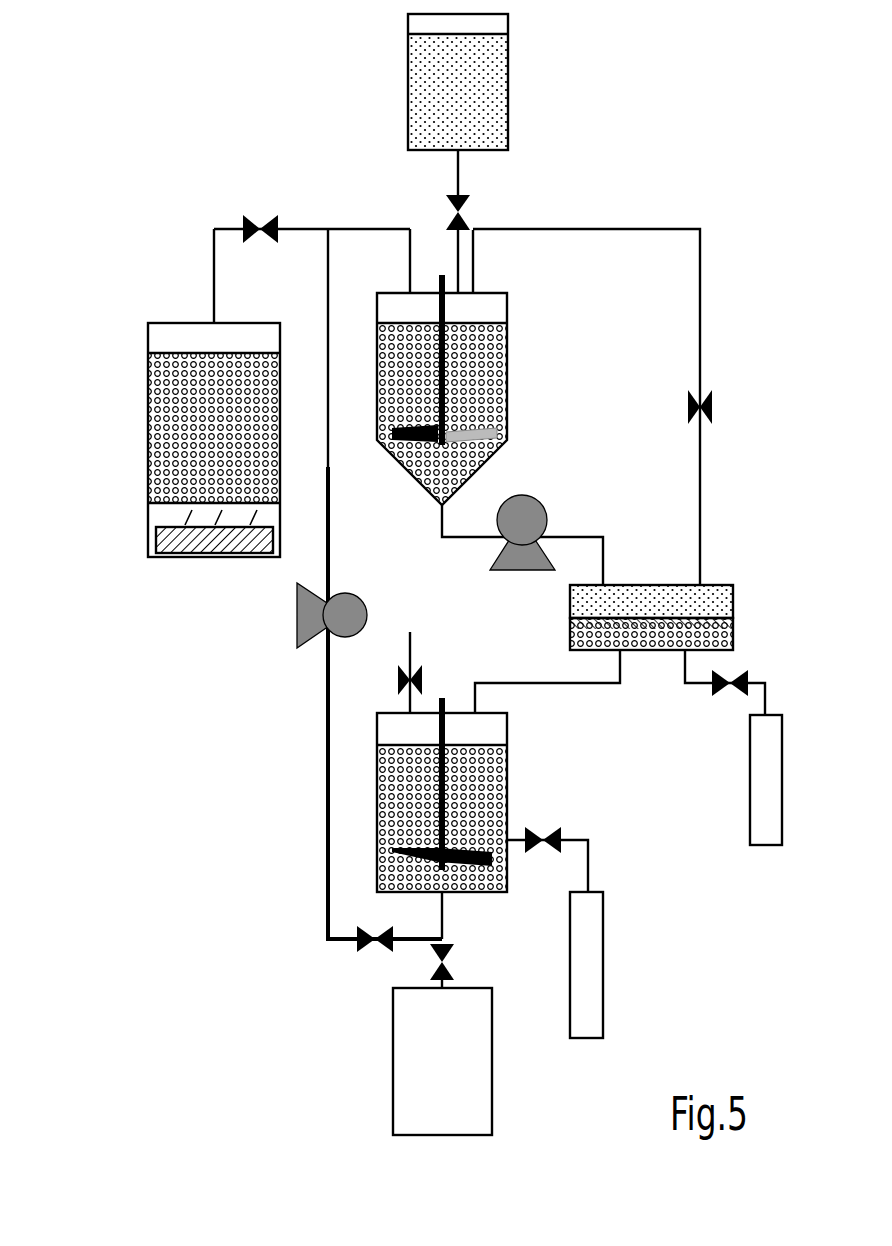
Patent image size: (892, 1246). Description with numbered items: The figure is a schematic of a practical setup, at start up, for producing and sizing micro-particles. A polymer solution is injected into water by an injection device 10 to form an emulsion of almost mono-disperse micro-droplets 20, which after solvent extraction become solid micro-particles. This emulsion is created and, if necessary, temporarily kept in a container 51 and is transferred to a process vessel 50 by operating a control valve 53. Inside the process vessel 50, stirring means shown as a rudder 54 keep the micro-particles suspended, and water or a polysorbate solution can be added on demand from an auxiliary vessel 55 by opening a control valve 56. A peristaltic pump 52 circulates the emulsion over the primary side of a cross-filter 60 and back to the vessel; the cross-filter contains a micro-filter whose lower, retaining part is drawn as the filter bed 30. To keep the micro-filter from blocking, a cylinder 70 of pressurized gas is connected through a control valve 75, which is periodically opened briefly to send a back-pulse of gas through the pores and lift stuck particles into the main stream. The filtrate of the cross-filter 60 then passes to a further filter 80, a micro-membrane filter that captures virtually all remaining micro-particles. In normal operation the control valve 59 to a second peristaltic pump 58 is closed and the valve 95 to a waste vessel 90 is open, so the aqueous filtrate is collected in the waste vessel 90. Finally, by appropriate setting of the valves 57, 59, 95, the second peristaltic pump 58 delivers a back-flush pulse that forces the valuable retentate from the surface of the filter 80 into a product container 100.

The injection device 10 is at (155, 537).
The micro-droplets 20 is at (152, 432).
The filter bed 30 is at (735, 628).
The process vessel 50 is at (490, 320).
The container 51 is at (165, 345).
The peristaltic pump 52 is at (548, 520).
The control valve 53 is at (248, 218).
The rudder 54 is at (503, 422).
The auxiliary vessel 55 is at (478, 45).
The control valve 56 is at (472, 213).
The valve 57 is at (548, 832).
The second peristaltic pump 58 is at (295, 630).
The control valve 59 is at (372, 948).
The cross-filter 60 is at (713, 600).
The cylinder of pressurized gas 70 is at (760, 778).
The control valve 75 is at (712, 690).
The further filter 80 is at (497, 738).
The waste vessel 90 is at (482, 1065).
The valve 95 is at (458, 960).
The product container 100 is at (603, 940).